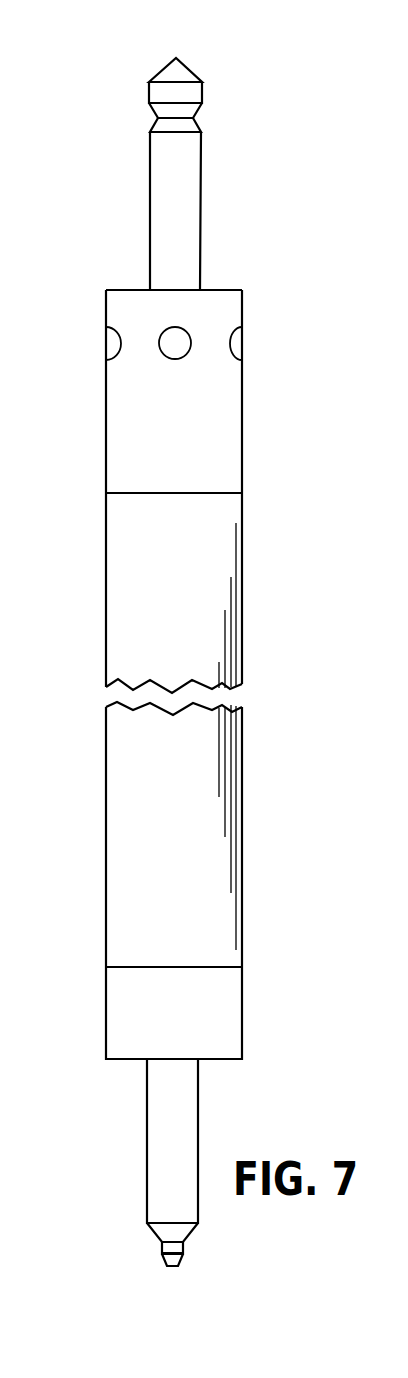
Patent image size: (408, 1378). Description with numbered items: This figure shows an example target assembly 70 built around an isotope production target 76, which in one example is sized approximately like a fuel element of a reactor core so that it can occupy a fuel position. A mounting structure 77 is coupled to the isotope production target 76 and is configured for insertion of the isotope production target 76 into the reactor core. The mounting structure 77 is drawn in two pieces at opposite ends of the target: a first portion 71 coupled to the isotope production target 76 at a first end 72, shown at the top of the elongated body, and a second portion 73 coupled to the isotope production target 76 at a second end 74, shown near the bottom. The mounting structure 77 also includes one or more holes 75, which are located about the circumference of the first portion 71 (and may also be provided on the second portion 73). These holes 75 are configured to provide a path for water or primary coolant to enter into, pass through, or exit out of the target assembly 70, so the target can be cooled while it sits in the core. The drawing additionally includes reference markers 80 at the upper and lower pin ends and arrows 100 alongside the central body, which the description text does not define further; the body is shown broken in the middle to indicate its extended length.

The target assembly 70 is at (92, 206).
The first portion 71 is at (106, 425).
The first end 72 is at (244, 527).
The second portion 73 is at (106, 1010).
The second end 74 is at (242, 938).
The holes 75 is at (112, 343).
The isotope production target 76 is at (106, 600).
The mounting structure 77 is at (147, 1145).
The reference axis 80 is at (218, 18).
The direction of movement 100 is at (90, 771).